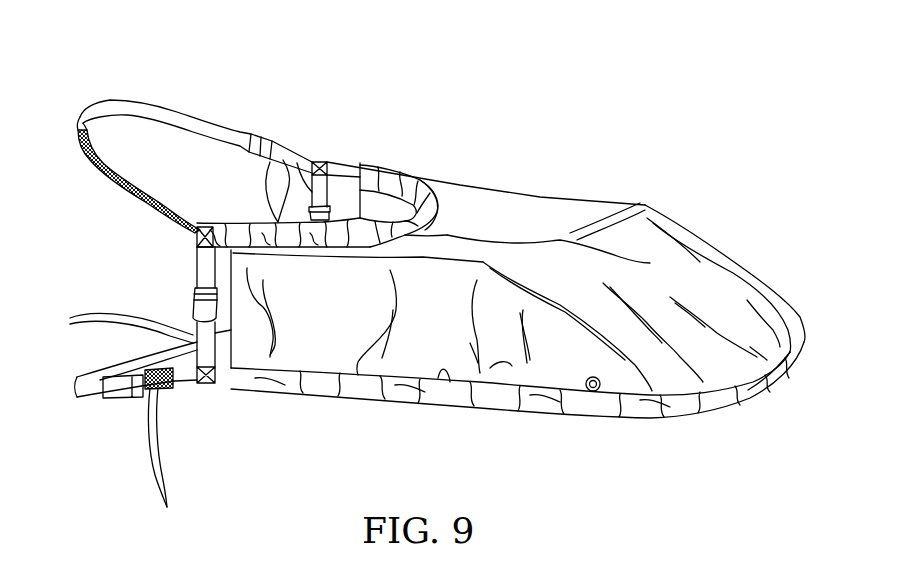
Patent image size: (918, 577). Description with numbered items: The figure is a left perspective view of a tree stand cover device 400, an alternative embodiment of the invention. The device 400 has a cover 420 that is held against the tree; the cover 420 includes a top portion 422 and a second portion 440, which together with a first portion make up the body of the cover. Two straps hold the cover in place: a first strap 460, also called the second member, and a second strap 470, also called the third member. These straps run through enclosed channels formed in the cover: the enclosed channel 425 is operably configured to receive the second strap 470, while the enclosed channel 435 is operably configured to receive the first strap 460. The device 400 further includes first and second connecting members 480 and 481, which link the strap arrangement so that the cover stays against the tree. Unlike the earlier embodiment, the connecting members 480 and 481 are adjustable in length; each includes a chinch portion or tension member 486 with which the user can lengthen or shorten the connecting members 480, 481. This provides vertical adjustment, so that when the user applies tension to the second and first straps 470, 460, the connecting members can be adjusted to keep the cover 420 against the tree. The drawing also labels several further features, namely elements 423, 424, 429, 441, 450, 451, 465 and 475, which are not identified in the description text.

The tree stand cover device 400 is at (648, 148).
The cover 420 is at (512, 190).
The top portion 422 is at (550, 210).
The bottom elastic band 423 is at (677, 403).
The elastic collar 424 is at (357, 167).
The enclosed channel 425 is at (440, 197).
The grommet 429 is at (598, 393).
The enclosed channel 435 is at (442, 372).
The second portion 440 is at (490, 380).
The fold line 441 is at (368, 402).
The side flap 450 is at (710, 287).
The flap edge 451 is at (733, 407).
The first strap 460 is at (77, 395).
The strap free end 465 is at (117, 400).
The second strap 470 is at (82, 103).
The strap buckle 475 is at (255, 133).
The first connecting member 480 is at (193, 314).
The second connecting member 481 is at (300, 147).
The tension member 486 is at (193, 293).